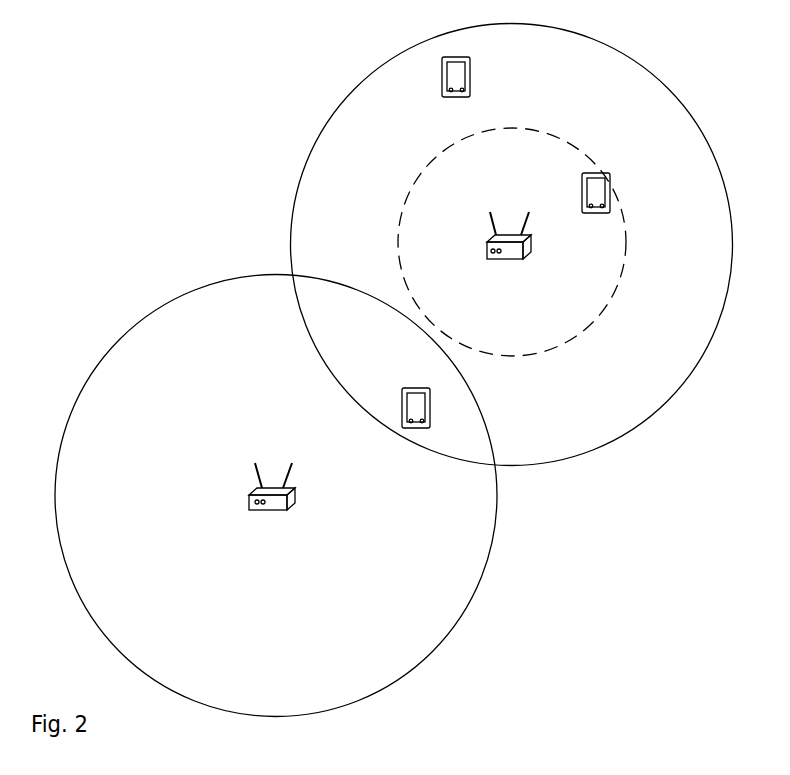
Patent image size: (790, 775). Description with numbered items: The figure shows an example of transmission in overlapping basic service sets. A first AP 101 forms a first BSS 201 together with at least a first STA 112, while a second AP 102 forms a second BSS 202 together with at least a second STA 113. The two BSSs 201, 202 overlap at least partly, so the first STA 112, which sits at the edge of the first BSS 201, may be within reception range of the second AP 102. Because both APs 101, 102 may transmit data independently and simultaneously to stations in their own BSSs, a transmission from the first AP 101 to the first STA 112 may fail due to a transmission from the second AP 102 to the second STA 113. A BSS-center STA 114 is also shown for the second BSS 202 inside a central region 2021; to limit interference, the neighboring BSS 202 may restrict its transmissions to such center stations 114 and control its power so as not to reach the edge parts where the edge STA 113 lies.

The first AP 101 is at (270, 520).
The second AP 102 is at (515, 264).
The first STA 112 is at (421, 435).
The second STA 113 is at (460, 107).
The BSS-center STA 114 is at (603, 222).
The first BSS 201 is at (163, 420).
The second BSS 202 is at (657, 145).
The inner coverage area of second access point 2021 is at (588, 328).